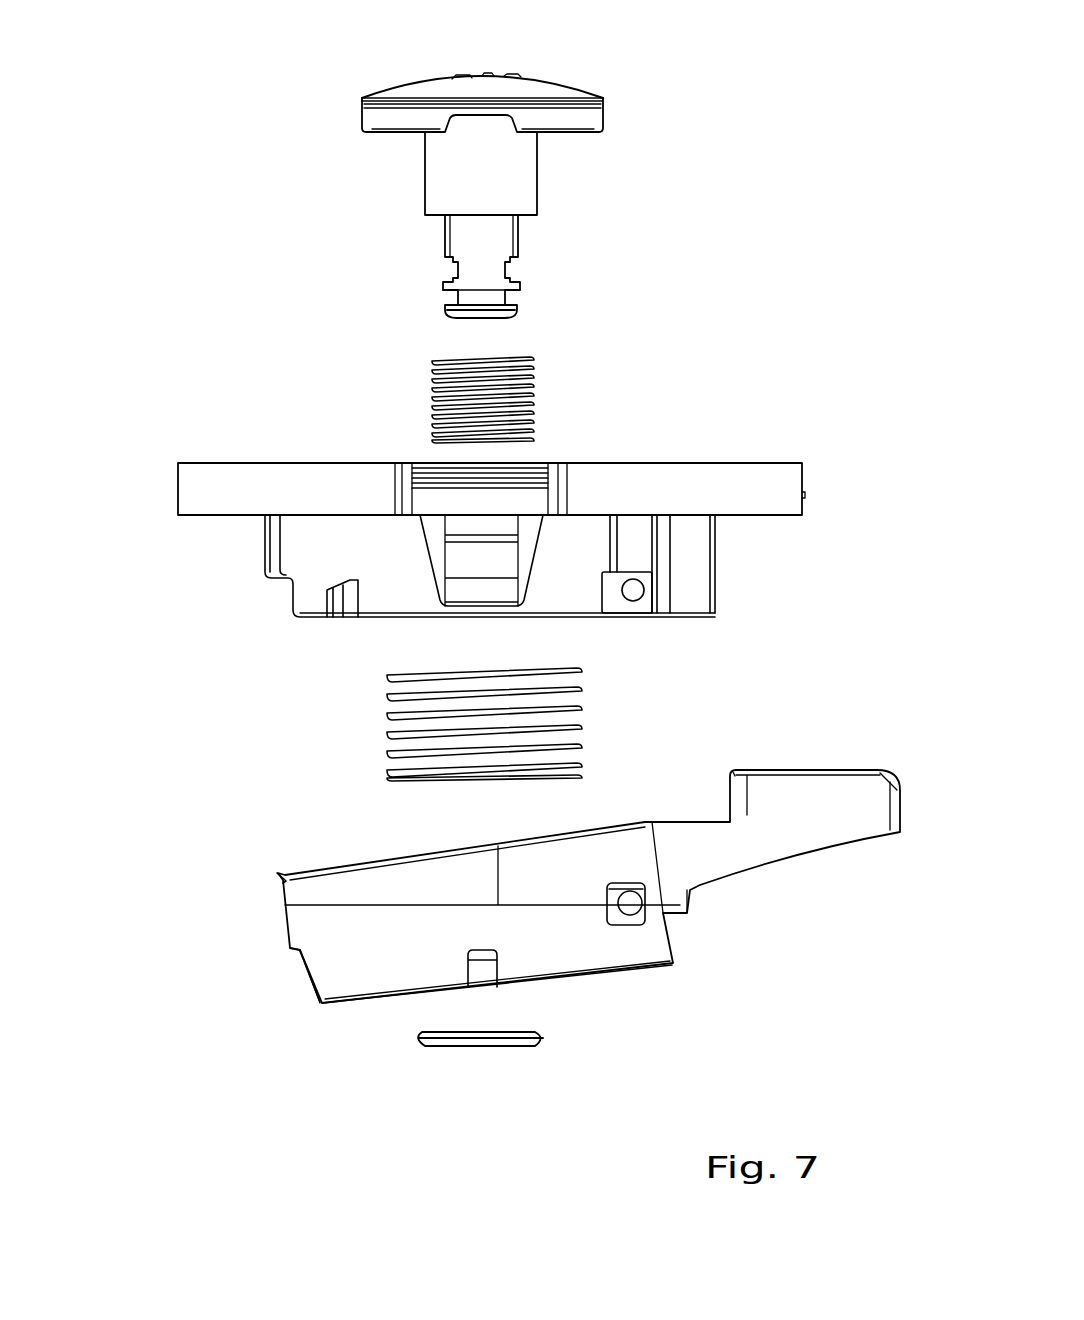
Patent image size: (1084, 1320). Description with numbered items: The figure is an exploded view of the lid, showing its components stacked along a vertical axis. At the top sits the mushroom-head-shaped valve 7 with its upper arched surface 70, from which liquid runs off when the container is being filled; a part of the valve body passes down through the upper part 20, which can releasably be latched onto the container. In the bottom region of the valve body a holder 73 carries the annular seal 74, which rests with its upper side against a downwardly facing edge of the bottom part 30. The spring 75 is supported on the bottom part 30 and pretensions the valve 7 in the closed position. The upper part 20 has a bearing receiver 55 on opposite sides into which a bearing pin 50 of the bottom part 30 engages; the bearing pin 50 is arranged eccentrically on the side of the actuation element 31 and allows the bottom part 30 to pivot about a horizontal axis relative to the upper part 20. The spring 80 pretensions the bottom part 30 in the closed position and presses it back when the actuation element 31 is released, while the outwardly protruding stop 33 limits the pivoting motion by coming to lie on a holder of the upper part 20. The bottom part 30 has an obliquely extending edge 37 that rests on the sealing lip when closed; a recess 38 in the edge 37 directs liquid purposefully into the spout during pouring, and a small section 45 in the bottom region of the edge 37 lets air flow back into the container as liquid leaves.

The upper arched surface 70 is at (545, 95).
The valve 7 is at (468, 158).
The holder 73 is at (500, 315).
The spring 75 is at (432, 365).
The upper part 20 is at (300, 482).
The bearing receiver 55 is at (635, 590).
The spring 80 is at (400, 673).
The bottom part 30 is at (506, 923).
The actuation element 31 is at (823, 772).
The stop 33 is at (276, 876).
The recess 38 is at (307, 977).
The edge 37 is at (330, 985).
The bearing pin 50 is at (632, 905).
The small section 45 is at (487, 976).
The annular seal 74 is at (422, 1033).